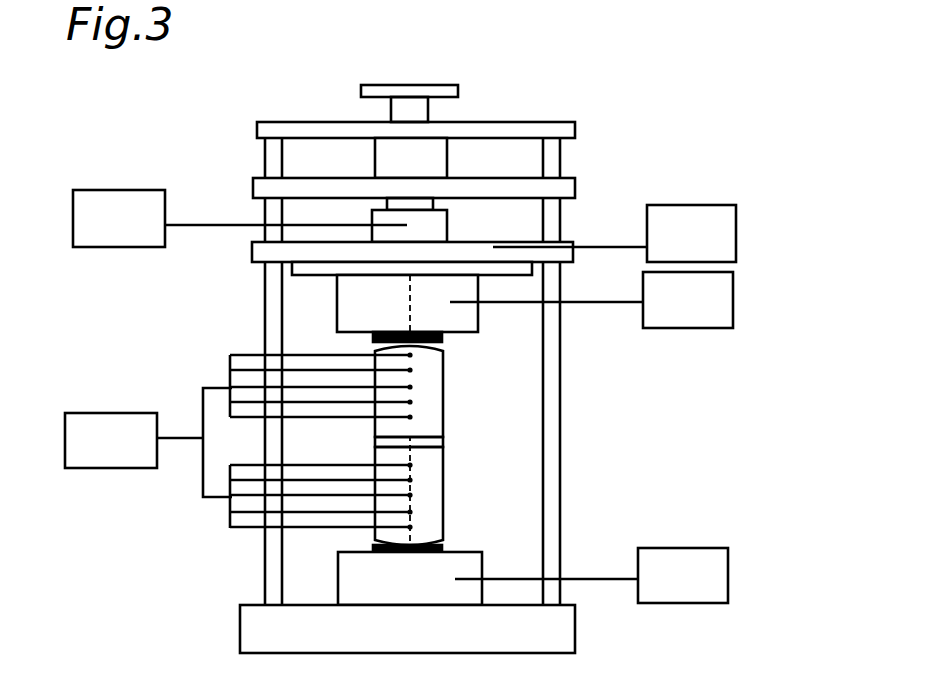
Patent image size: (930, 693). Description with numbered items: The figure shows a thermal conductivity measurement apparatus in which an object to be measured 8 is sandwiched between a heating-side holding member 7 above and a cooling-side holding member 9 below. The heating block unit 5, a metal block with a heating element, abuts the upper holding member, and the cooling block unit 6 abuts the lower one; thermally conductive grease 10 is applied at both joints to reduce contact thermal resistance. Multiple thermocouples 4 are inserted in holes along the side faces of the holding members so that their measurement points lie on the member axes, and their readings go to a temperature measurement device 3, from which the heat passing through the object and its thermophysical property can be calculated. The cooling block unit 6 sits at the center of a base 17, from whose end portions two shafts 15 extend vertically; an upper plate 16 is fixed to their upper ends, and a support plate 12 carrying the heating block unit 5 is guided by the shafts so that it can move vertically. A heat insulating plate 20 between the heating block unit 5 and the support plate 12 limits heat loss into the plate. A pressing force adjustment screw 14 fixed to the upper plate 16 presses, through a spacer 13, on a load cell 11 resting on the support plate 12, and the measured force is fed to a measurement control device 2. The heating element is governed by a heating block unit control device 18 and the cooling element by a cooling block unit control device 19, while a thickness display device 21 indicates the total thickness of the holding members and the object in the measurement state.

The measurement control device 2 is at (126, 232).
The temperature measurement device 3 is at (127, 428).
The thermocouples 4 is at (203, 410).
The heating block unit 5 is at (348, 290).
The cooling block unit 6 is at (365, 582).
The heating-side holding member 7 is at (443, 400).
The object to be measured 8 is at (443, 446).
The cooling-side holding member 9 is at (443, 497).
The thermally conductive grease 10 is at (442, 337).
The load cell 11 is at (438, 225).
The support plate 12 is at (558, 250).
The spacer 13 is at (537, 188).
The pressing force adjustment screw 14 is at (428, 137).
The shafts 15 is at (277, 162).
The upper plate 16 is at (480, 130).
The base 17 is at (275, 628).
The heating block unit control device 18 is at (715, 290).
The cooling block unit control device 19 is at (708, 568).
The heat insulating plate 20 is at (531, 263).
The thickness display device 21 is at (688, 243).